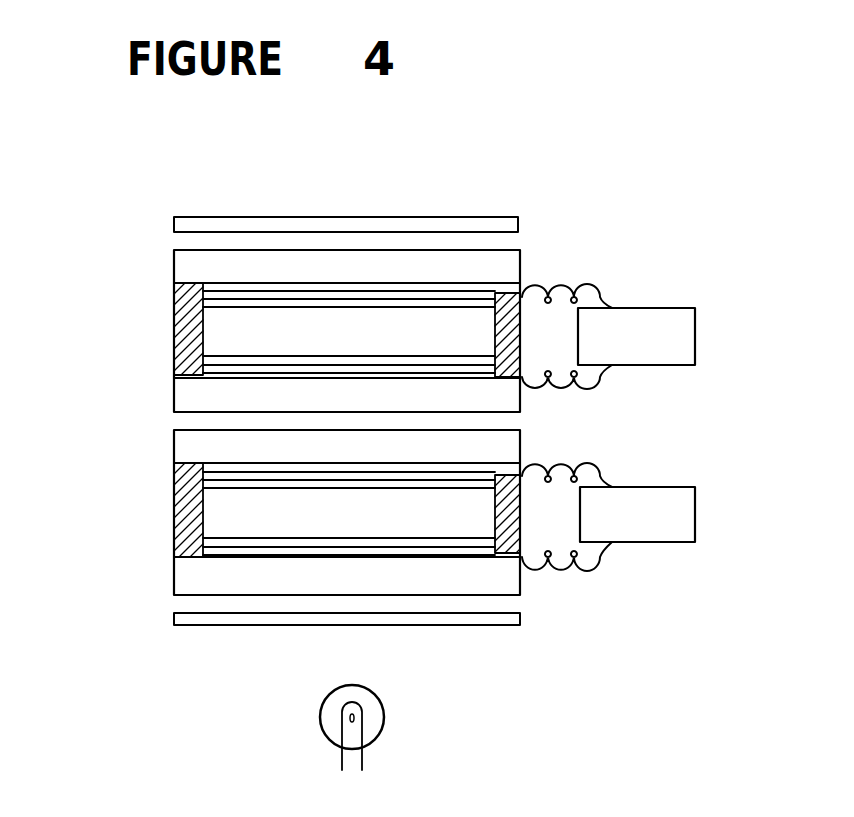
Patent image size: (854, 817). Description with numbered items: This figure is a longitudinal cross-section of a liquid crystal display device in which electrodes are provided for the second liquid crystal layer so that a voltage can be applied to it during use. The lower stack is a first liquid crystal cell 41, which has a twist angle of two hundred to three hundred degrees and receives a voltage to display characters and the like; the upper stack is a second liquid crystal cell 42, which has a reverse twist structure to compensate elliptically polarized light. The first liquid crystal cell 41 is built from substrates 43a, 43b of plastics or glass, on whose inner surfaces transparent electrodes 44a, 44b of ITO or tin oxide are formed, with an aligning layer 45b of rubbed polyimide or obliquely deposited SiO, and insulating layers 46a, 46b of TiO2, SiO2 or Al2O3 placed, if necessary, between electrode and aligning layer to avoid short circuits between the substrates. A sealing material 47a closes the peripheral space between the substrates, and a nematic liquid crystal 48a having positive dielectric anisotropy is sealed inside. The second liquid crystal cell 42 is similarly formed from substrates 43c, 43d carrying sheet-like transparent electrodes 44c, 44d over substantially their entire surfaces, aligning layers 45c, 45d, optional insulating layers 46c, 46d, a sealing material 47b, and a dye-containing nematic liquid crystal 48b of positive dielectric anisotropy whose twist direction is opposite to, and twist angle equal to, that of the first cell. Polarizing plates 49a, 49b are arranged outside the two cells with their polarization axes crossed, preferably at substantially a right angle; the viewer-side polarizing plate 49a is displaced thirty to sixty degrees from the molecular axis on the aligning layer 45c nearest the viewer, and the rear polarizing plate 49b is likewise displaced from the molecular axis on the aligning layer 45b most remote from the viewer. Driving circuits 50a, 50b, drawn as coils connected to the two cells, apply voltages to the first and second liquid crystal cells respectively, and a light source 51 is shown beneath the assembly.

The first liquid crystal cell 41 is at (166, 432).
The second liquid crystal cell 42 is at (170, 240).
The substrate 43a is at (500, 452).
The substrate 43b is at (503, 585).
The substrate 43c is at (490, 270).
The substrate 43d is at (522, 418).
The transparent electrode 44a is at (223, 465).
The transparent electrode 44b is at (195, 577).
The transparent electrode 44c is at (518, 268).
The transparent electrode 44d is at (490, 400).
The aligning layer 45b is at (222, 552).
The aligning layer 45c is at (212, 305).
The aligning layer 45d is at (212, 370).
The insulating layer 46a is at (223, 480).
The insulating layer 46b is at (222, 515).
The insulating layer 46c is at (225, 294).
The insulating layer 46d is at (222, 360).
The sealing material 47a is at (210, 540).
The sealing material 47b is at (185, 320).
The nematic liquid crystal 48a is at (582, 563).
The nematic liquid crystal 48b is at (513, 327).
The polarizing plate 49a is at (492, 220).
The polarizing plate 49b is at (520, 622).
The driving circuit 50a is at (665, 542).
The driving circuit 50b is at (650, 365).
The light source 51 is at (381, 715).